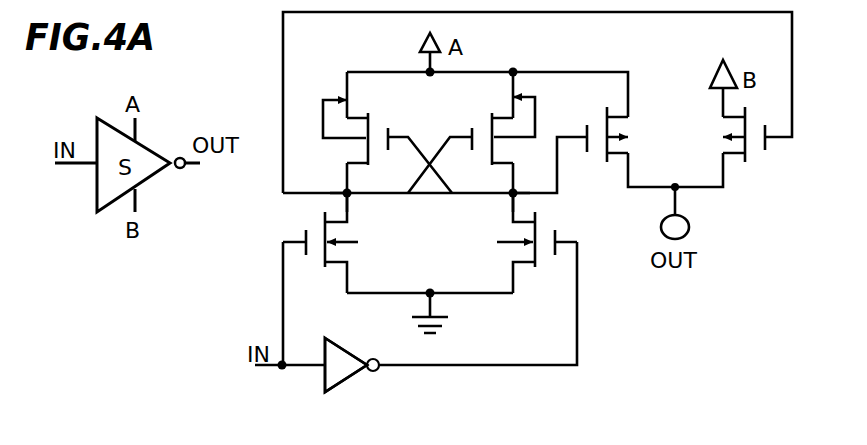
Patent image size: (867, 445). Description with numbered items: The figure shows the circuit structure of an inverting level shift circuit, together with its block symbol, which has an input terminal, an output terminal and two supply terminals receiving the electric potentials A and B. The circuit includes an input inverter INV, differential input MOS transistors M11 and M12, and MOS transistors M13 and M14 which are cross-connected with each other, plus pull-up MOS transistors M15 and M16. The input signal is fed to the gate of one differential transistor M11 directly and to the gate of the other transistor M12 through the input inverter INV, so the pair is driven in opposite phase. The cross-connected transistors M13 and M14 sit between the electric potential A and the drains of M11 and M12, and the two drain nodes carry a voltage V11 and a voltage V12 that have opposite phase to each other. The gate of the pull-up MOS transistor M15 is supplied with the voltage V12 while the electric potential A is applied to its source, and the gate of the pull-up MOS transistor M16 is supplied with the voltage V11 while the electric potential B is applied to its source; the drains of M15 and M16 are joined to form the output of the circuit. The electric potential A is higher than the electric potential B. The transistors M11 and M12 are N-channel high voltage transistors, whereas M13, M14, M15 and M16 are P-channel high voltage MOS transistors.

The differential input MOS transistor M11 is at (342, 243).
The differential input MOS transistor M12 is at (517, 243).
The cross-connected MOS transistor M13 is at (371, 144).
The cross-connected MOS transistor M14 is at (499, 138).
The pull-up MOS transistor M15 is at (634, 132).
The pull-up MOS transistor M16 is at (770, 140).
The voltage V11 is at (343, 197).
The voltage V12 is at (515, 196).
The input inverter INV is at (345, 378).